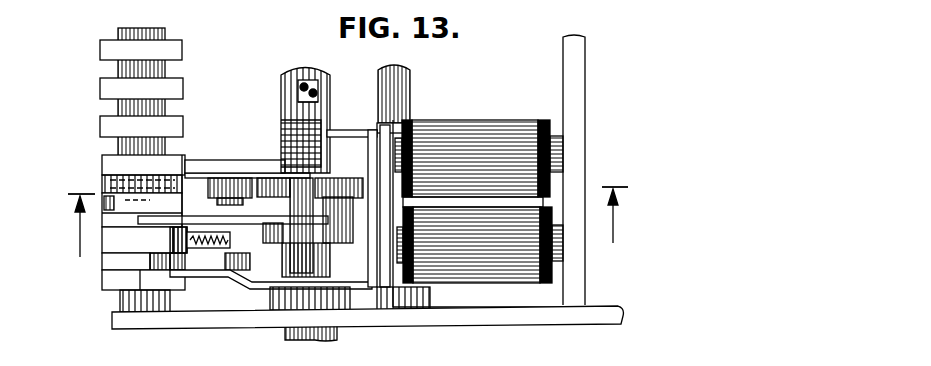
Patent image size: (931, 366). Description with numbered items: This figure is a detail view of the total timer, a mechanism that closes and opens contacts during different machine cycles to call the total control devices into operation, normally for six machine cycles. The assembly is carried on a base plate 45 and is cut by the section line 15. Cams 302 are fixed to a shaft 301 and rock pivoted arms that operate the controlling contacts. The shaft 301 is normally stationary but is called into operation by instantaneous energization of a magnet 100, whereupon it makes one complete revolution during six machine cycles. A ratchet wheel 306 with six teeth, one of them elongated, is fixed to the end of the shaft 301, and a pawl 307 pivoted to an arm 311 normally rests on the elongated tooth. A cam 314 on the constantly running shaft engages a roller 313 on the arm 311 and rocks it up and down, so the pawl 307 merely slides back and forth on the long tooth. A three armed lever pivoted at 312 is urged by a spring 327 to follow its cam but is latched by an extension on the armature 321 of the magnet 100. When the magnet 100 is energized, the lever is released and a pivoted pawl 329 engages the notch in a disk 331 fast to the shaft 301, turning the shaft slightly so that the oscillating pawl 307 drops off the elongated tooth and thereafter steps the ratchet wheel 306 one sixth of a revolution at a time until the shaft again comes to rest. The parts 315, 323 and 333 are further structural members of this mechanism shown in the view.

The section line 15- 15 is at (348, 213).
The base plate 45 is at (367, 331).
The magnet 100 is at (470, 223).
The shaft 301 is at (168, 74).
The cams 302 is at (177, 52).
The ratchet wheel 306 is at (118, 192).
The pawl 307 is at (102, 183).
The arm 311 is at (197, 170).
The pivot of three armed lever 312 is at (313, 90).
The roller 313 is at (231, 180).
The cam 314 is at (338, 178).
The spring housing 315 is at (290, 137).
The armature 321 is at (383, 140).
The angled plate 323 is at (260, 273).
The spring 327 is at (212, 248).
The pawl 329 is at (197, 258).
The notched disk 331 is at (112, 262).
The lower block 333 is at (130, 200).